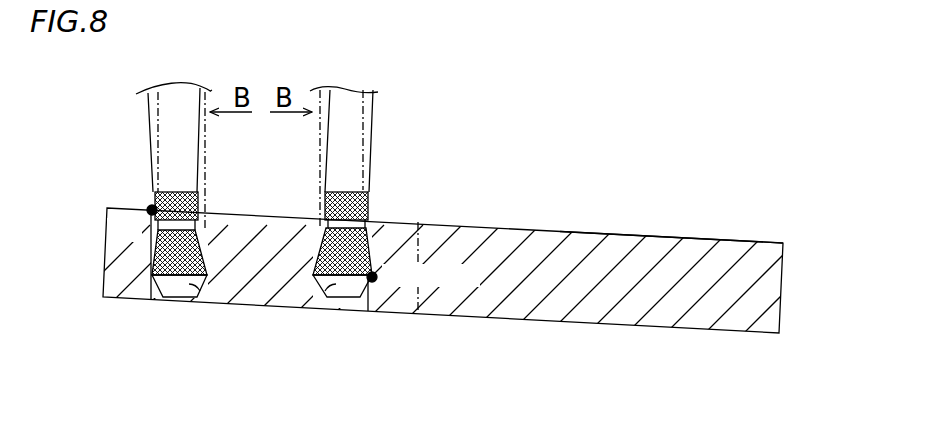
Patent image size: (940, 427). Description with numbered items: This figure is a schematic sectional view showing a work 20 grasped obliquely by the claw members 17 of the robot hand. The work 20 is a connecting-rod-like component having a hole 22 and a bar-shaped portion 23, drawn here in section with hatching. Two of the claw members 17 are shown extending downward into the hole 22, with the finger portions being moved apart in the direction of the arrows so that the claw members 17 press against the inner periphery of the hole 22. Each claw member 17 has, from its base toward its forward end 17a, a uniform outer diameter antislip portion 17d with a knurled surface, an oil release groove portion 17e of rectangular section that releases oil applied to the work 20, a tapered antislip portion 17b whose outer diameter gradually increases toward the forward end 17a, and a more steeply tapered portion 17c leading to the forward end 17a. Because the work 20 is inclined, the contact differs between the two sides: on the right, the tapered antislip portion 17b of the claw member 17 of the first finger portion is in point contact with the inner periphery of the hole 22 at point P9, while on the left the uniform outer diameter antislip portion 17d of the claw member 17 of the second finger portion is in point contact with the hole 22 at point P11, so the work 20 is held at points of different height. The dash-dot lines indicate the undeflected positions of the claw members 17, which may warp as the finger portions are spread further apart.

The claw member 17 is at (172, 106).
The forward end 17a is at (180, 298).
The tapered antislip portion 17b is at (204, 249).
The tapered portion 17c is at (199, 300).
The uniform outer diameter antislip portion 17d is at (154, 197).
The oil release groove portion 17e is at (200, 222).
The work 20 is at (586, 168).
The hole 22 is at (370, 312).
The bar-shaped portion 23 is at (708, 252).
The point P9 is at (425, 276).
The point P11 is at (93, 225).